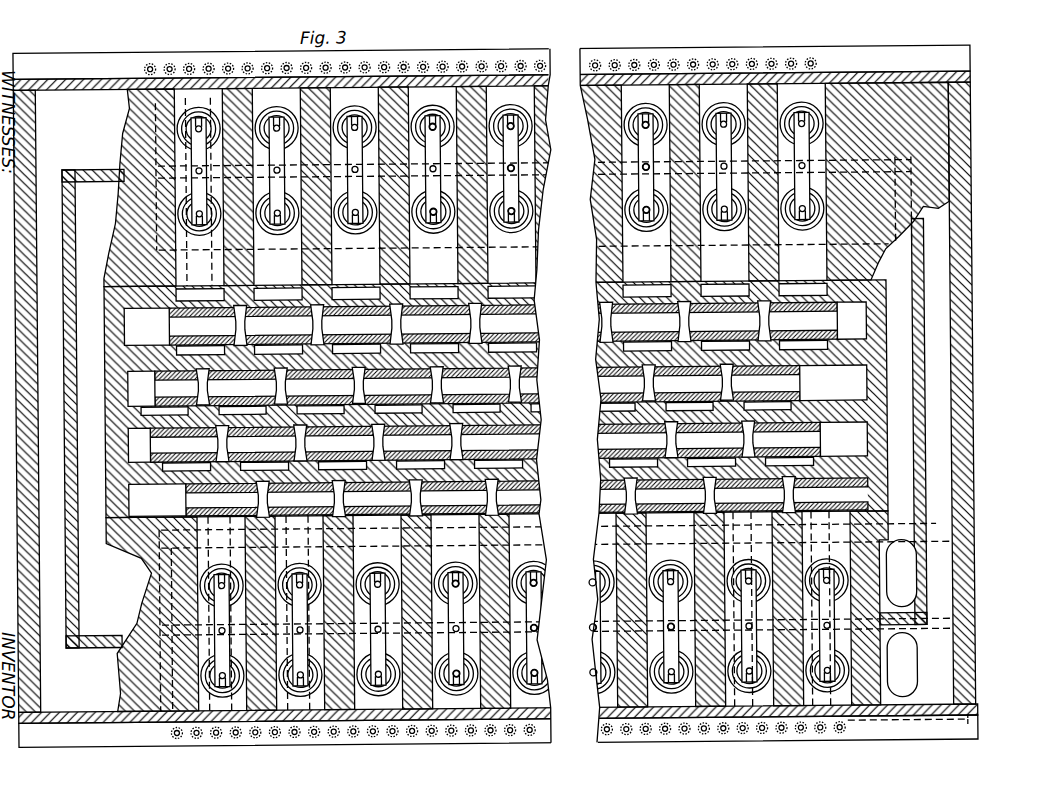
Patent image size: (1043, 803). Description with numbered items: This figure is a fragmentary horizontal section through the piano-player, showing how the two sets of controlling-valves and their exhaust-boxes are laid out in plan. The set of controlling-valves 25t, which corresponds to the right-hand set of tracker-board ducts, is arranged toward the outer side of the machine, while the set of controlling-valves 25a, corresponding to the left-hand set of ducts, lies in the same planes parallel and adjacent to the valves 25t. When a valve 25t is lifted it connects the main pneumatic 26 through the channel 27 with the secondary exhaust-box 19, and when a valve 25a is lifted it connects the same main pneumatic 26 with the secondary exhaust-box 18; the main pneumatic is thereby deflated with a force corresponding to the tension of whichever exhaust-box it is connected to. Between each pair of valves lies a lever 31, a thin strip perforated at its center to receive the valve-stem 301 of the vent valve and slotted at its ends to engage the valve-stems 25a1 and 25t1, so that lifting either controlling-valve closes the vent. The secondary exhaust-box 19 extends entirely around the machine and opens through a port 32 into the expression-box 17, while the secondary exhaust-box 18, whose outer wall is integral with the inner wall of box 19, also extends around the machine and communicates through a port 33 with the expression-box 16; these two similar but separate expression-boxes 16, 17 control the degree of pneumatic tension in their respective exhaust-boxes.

The expression-box 16 is at (935, 520).
The expression-box 17 is at (942, 722).
The secondary exhaust-box 18 is at (494, 404).
The secondary exhaust-box 19 is at (494, 397).
The controlling-valve 25t is at (433, 124).
The valve-stem 25t1 is at (645, 124).
The controlling-valve 25a is at (438, 216).
The valve-stem 25a1 is at (645, 211).
The main pneumatic 26 is at (496, 409).
The channel 27 is at (484, 402).
The valve-stem 301 is at (645, 167).
The lever 31 is at (357, 216).
The port 32 is at (905, 660).
The port 33 is at (900, 572).